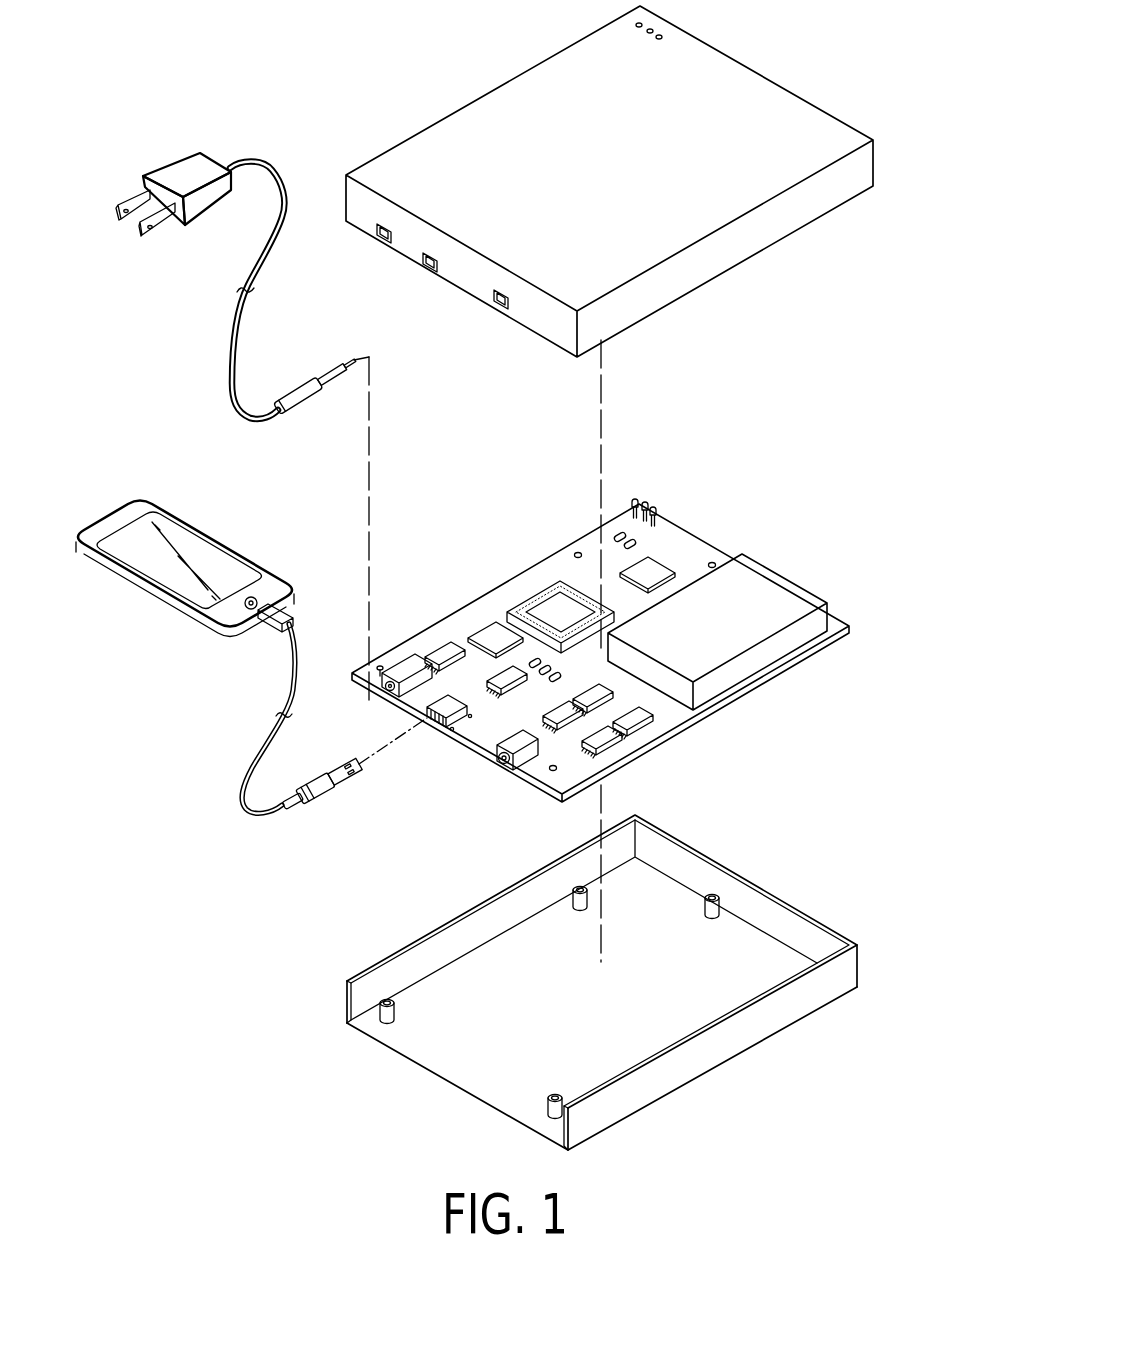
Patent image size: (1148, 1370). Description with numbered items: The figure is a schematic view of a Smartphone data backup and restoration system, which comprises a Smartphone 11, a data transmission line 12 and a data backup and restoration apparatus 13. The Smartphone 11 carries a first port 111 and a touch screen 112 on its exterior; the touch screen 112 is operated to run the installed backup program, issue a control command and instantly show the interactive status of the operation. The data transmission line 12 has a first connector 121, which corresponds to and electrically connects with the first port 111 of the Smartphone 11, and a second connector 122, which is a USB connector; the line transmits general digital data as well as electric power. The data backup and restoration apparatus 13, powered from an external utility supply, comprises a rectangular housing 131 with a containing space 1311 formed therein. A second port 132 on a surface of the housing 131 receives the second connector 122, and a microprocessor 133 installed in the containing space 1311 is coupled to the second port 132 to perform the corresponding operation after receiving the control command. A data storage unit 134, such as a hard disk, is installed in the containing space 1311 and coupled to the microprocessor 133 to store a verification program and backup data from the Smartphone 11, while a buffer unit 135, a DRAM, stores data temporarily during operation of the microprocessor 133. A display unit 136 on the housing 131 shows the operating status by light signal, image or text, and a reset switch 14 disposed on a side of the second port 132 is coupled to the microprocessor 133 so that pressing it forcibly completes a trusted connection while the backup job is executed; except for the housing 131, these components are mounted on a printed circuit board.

The Smartphone 11 is at (160, 502).
The first port 111 is at (250, 596).
The touch screen 112 is at (198, 538).
The data transmission line 12 is at (275, 813).
The first connector 121 is at (276, 606).
The second connector 122 is at (337, 797).
The data backup and restoration apparatus 13 is at (804, 163).
The housing 131 is at (740, 237).
The containing space 1311 is at (457, 950).
The second port 132 is at (452, 730).
The microprocessor 133 is at (528, 595).
The data storage unit 134 is at (652, 717).
The buffer unit 135 is at (757, 573).
The display unit 136 is at (660, 512).
The reset switch 14 is at (527, 760).